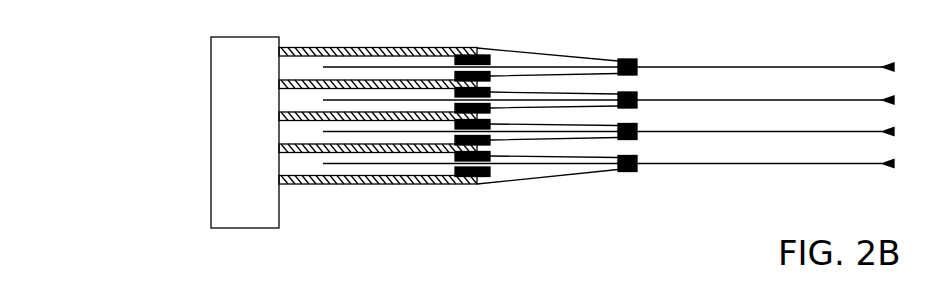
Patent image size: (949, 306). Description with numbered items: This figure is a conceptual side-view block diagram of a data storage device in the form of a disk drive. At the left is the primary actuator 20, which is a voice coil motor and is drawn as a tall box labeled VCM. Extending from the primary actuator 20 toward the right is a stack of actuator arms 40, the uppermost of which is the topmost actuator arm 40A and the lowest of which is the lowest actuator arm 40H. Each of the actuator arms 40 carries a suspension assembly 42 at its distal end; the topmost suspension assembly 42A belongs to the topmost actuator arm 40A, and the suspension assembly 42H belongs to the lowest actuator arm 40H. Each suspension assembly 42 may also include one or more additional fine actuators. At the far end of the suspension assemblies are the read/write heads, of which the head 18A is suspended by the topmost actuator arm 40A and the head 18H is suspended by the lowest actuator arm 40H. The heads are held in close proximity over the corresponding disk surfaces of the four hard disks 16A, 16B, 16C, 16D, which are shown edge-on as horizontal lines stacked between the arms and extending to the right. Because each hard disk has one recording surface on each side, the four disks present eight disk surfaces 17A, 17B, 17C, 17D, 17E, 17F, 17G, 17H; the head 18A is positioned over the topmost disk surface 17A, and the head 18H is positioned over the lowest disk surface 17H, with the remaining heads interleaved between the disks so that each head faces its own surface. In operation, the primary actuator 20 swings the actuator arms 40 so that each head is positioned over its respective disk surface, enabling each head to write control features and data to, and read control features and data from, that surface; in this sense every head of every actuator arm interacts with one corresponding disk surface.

The hard disk 16A is at (894, 67).
The hard disk 16B is at (894, 100).
The hard disk 16C is at (894, 132).
The hard disk 16D is at (894, 164).
The disk surface 17A is at (793, 66).
The disk surface 17B is at (778, 68).
The disk surface 17C is at (793, 99).
The disk surface 17D is at (778, 101).
The disk surface 17E is at (778, 131).
The disk surface 17F is at (762, 133).
The disk surface 17G is at (778, 163).
The disk surface 17H is at (762, 165).
The read/write head 18A is at (647, 50).
The read/write head 18H is at (648, 180).
The primary actuator 20 is at (211, 73).
The actuator arms 40 is at (387, 206).
The topmost actuator arm 40A is at (397, 47).
The lowest actuator arm 40H is at (348, 185).
The suspension assembly 42 is at (546, 206).
The topmost suspension assembly 42A is at (574, 43).
The suspension assembly 42H is at (573, 185).